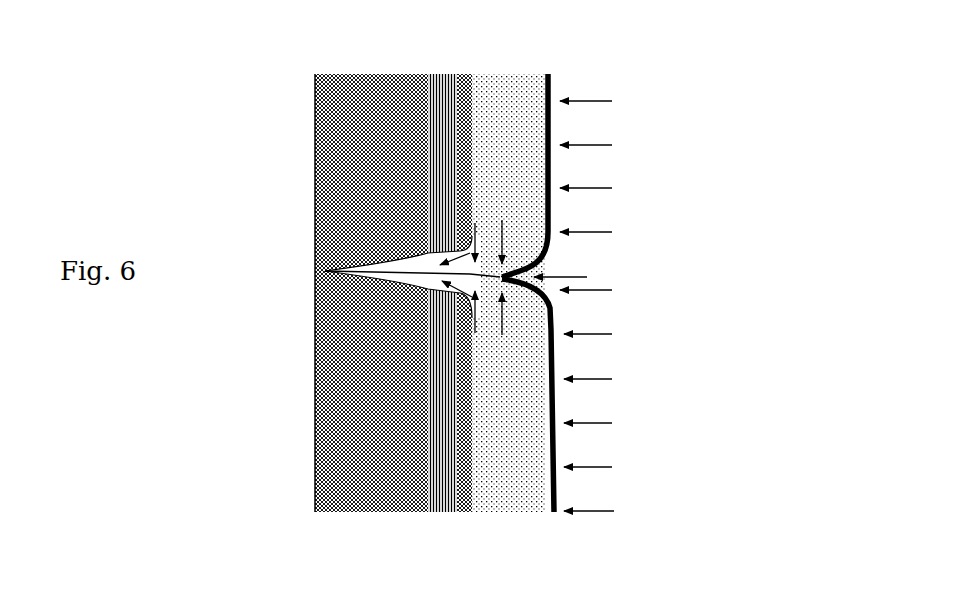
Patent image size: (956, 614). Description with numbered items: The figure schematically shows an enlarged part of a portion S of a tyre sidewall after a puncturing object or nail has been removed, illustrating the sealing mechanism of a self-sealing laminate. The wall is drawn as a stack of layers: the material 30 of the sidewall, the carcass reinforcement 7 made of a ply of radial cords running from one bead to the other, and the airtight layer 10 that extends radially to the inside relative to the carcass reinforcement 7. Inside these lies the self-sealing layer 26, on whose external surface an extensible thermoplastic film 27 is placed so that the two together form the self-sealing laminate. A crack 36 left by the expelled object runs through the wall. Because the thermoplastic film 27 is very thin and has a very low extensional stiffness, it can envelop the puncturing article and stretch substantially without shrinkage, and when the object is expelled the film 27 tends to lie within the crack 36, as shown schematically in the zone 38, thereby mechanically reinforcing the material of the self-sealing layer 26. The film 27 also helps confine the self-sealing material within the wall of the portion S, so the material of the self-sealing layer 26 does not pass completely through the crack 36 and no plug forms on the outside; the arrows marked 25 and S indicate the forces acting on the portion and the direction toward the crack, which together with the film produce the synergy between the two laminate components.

The material of the sidewall 30 is at (355, 115).
The carcass reinforcement 7 is at (437, 102).
The airtight layer 10 is at (465, 72).
The self-sealing layer 26 is at (508, 104).
The extensible thermoplastic film 27 is at (552, 89).
The crack 36 is at (392, 263).
The zone 38 is at (502, 296).
The hot gas flow 25 is at (513, 526).
The portion of a sidewall S is at (606, 306).